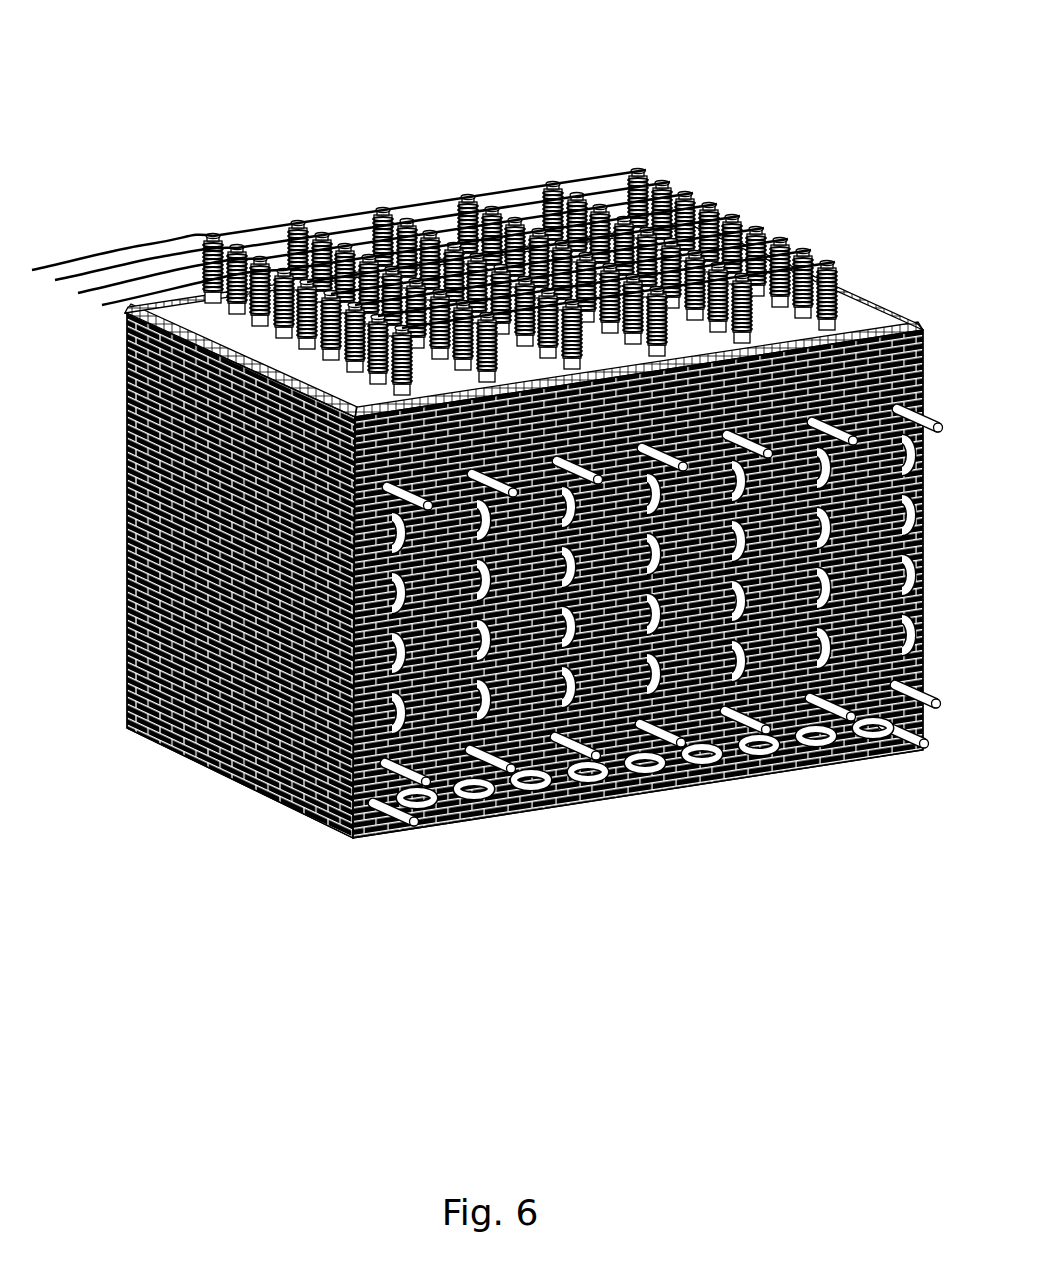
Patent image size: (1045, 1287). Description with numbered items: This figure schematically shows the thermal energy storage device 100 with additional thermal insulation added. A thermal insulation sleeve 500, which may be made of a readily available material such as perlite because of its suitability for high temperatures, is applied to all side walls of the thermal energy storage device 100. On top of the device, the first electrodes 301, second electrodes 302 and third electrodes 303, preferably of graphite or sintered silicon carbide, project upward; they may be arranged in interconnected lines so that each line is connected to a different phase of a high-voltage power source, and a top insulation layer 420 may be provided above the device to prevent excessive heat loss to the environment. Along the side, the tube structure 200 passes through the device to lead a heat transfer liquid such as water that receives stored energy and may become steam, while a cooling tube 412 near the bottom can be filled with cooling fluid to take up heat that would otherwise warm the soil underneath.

The thermal energy storage device 100 is at (487, 461).
The tube structure 200 is at (478, 710).
The first electrodes 301 is at (834, 277).
The second electrodes 302 is at (797, 256).
The third electrodes 303 is at (772, 240).
The cooling tube 412 is at (702, 757).
The top insulation layer 420 is at (205, 320).
The thermal insulation sleeve 500 is at (307, 753).